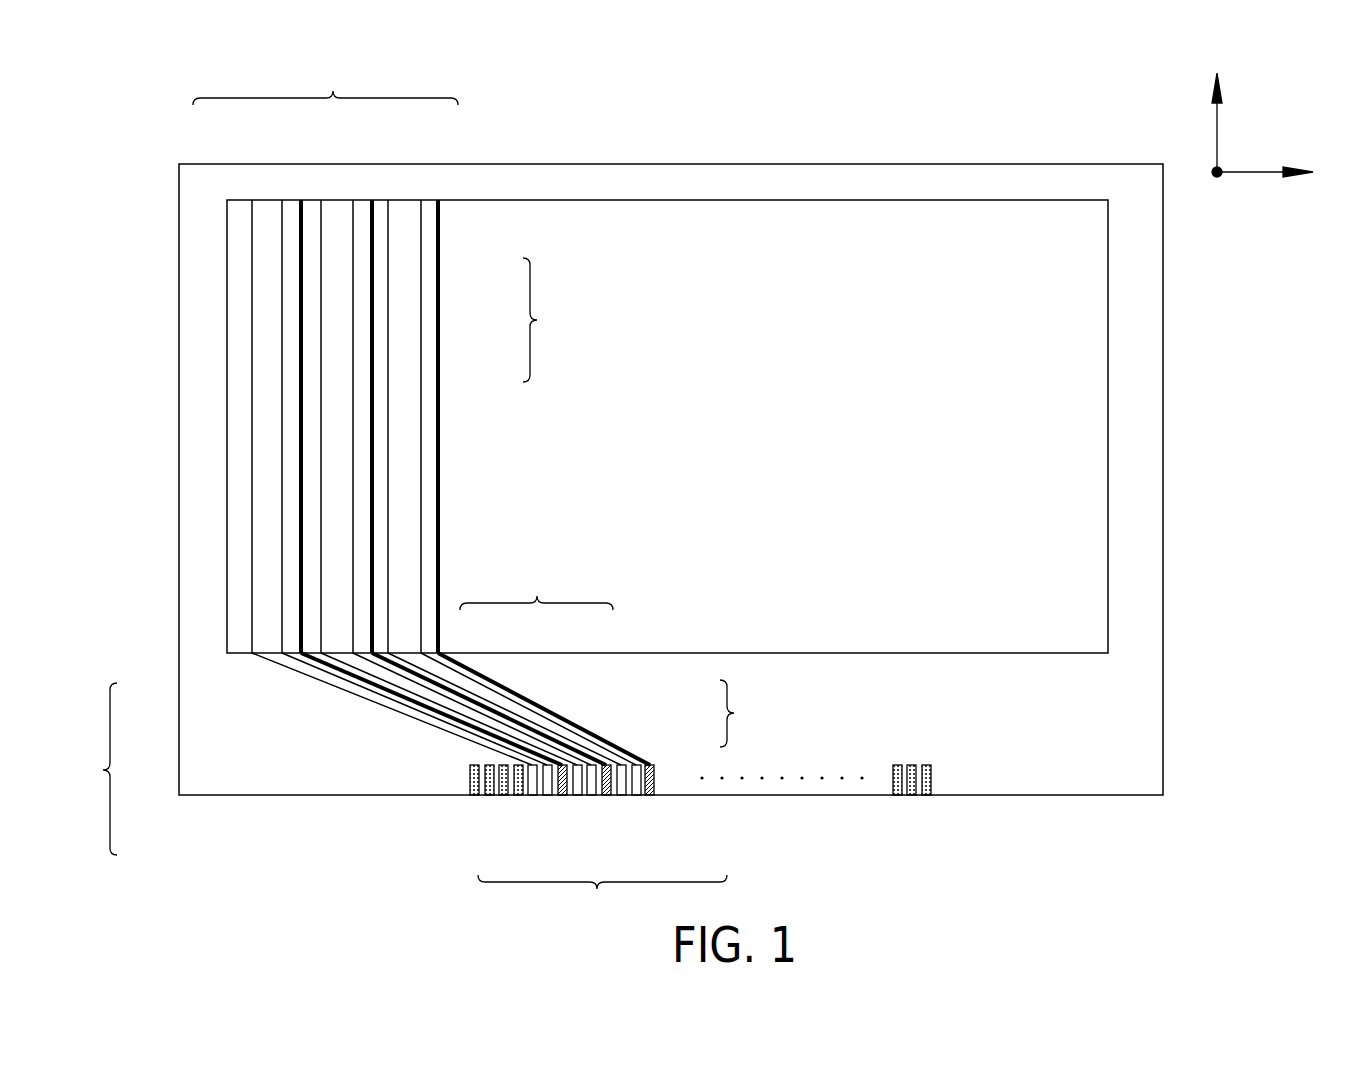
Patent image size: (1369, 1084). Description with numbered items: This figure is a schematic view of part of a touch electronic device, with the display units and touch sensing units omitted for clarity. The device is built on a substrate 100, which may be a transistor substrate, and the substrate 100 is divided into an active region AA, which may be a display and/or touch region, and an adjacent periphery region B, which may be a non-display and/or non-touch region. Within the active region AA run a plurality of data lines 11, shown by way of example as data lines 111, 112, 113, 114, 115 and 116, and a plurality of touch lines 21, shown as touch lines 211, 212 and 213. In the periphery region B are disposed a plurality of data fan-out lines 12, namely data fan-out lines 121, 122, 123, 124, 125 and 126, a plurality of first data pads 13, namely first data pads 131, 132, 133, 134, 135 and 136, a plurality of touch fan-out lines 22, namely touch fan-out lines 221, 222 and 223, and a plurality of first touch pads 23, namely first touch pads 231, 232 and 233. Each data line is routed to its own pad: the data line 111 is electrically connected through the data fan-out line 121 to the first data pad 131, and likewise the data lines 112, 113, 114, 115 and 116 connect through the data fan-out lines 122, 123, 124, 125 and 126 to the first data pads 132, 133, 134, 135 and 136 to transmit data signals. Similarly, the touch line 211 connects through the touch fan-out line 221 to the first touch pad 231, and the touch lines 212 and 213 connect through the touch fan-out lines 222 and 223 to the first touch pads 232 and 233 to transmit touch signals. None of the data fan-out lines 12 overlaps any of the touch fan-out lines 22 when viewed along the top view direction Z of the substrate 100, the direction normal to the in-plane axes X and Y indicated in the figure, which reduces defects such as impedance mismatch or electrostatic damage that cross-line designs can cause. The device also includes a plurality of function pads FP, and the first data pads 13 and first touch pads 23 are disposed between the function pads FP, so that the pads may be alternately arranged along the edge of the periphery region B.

The substrate 100 is at (1110, 797).
The active region AA is at (1090, 605).
The periphery region B is at (1133, 705).
The data lines 11 is at (325, 79).
The data line 111 is at (250, 213).
The data line 112 is at (280, 213).
The data line 113 is at (321, 212).
The data line 114 is at (353, 213).
The data line 115 is at (388, 213).
The data line 116 is at (423, 213).
The data fan-out lines 12 is at (89, 769).
The data fan-out line 121 is at (470, 742).
The data fan-out line 122 is at (463, 729).
The data fan-out line 123 is at (452, 712).
The data fan-out line 124 is at (445, 697).
The data fan-out line 125 is at (430, 676).
The data fan-out line 126 is at (435, 657).
The first data pads 13 is at (602, 902).
The first data pad 131 is at (530, 797).
The first data pad 132 is at (550, 797).
The first data pad 133 is at (575, 797).
The first data pad 134 is at (591, 797).
The first data pad 135 is at (621, 797).
The first data pad 136 is at (637, 797).
The touch lines 21 is at (548, 320).
The touch line 211 is at (303, 268).
The touch line 212 is at (374, 323).
The touch line 213 is at (440, 365).
The touch fan-out lines 22 is at (536, 582).
The touch fan-out line 221 is at (567, 725).
The touch fan-out line 222 is at (520, 747).
The touch fan-out line 223 is at (507, 715).
The first touch pads 23 is at (746, 713).
The first touch pad 231 is at (566, 763).
The first touch pad 232 is at (606, 763).
The first touch pad 233 is at (653, 768).
The function pads FP is at (475, 797).
The X direction X is at (1277, 171).
The Y direction Y is at (1218, 104).
The top view direction Z is at (1203, 171).